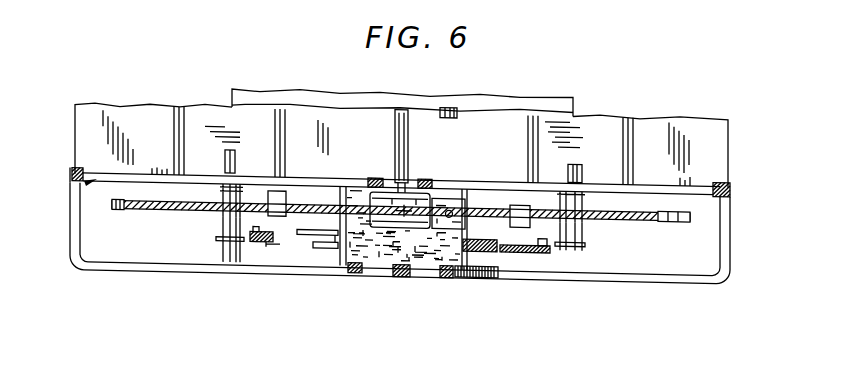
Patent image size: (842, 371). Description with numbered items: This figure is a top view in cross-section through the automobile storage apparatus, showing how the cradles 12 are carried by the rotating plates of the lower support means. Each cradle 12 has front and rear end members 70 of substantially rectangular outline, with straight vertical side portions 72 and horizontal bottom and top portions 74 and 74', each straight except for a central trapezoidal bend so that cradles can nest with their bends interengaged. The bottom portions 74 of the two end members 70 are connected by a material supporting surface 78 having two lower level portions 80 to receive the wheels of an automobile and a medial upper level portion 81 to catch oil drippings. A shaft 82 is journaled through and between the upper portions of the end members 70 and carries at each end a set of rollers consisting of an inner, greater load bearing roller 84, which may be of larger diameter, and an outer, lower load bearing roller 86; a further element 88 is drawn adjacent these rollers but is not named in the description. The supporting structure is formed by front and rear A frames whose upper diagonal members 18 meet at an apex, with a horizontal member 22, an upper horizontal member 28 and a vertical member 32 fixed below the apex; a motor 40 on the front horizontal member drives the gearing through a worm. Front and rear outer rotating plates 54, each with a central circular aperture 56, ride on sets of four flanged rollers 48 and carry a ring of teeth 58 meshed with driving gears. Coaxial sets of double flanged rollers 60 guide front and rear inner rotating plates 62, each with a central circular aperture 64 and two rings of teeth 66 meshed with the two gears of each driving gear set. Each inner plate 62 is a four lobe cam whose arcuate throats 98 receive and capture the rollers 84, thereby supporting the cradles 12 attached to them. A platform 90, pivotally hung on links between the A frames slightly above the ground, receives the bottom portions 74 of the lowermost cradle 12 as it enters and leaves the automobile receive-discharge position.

The cradle 12 is at (727, 99).
The upper diagonal members 18 is at (357, 267).
The horizontal member 22 is at (680, 270).
The upper horizontal member 28 is at (425, 251).
The vertical member 32 is at (403, 266).
The motor 40 is at (372, 188).
The flanged rollers 48 is at (322, 243).
The outer rotating plates 54 is at (540, 238).
The central circular aperture 56 is at (272, 240).
The teeth 58 is at (257, 238).
The double flanged rollers 60 is at (341, 196).
The inner rotating plates 62 is at (653, 211).
The central circular aperture 64 is at (277, 167).
The teeth 66 is at (275, 197).
The end members 70 is at (87, 178).
The vertical side portions 72 is at (83, 170).
The bottom portion 74 is at (671, 172).
The top portion 74' is at (157, 157).
The material supporting surface 78 is at (212, 92).
The lower level portions 80 is at (692, 110).
The medial upper level portion 81 is at (203, 106).
The shaft 82 is at (226, 155).
The inner rollers 84 is at (222, 188).
The outer rollers 86 is at (222, 220).
The flanges 88 is at (220, 233).
The platform 90 is at (233, 78).
The arcuate throats 98 is at (132, 205).